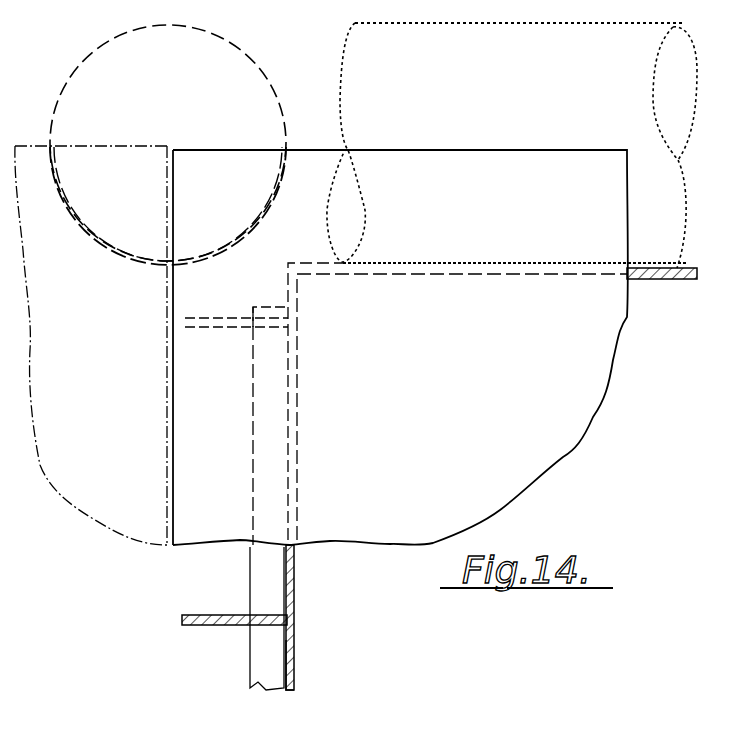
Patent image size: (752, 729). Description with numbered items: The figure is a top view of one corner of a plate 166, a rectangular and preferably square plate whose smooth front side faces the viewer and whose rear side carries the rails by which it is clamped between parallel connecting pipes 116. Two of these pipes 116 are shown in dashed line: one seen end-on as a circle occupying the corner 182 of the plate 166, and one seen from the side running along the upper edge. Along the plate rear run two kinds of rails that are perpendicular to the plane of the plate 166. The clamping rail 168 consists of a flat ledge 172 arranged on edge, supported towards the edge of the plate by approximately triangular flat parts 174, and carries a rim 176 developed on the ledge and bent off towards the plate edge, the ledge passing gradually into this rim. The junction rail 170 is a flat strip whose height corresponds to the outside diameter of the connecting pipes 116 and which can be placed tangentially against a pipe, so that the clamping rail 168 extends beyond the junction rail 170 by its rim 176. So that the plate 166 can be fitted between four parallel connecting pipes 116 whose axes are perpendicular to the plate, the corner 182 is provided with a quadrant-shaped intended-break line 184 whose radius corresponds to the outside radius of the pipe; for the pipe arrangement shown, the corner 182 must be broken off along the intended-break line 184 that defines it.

The connecting pipe 116 is at (130, 24).
The plate 166 is at (87, 526).
The clamping rail 168 is at (295, 569).
The junction rail 170 is at (690, 280).
The ledge 172 is at (290, 668).
The triangular flat part 174 is at (233, 332).
The rim 176 is at (258, 465).
The corner 182 is at (207, 167).
The intended-break line 184 is at (63, 200).